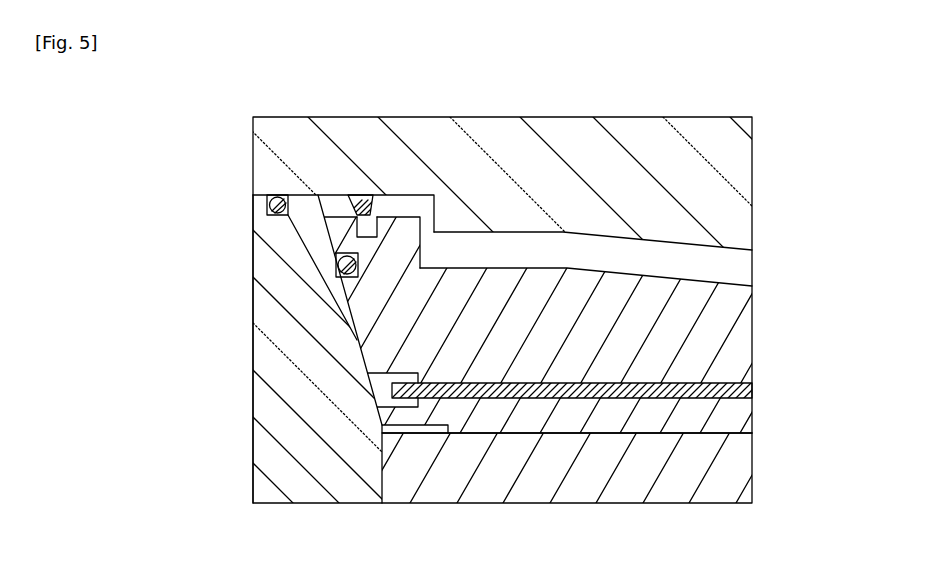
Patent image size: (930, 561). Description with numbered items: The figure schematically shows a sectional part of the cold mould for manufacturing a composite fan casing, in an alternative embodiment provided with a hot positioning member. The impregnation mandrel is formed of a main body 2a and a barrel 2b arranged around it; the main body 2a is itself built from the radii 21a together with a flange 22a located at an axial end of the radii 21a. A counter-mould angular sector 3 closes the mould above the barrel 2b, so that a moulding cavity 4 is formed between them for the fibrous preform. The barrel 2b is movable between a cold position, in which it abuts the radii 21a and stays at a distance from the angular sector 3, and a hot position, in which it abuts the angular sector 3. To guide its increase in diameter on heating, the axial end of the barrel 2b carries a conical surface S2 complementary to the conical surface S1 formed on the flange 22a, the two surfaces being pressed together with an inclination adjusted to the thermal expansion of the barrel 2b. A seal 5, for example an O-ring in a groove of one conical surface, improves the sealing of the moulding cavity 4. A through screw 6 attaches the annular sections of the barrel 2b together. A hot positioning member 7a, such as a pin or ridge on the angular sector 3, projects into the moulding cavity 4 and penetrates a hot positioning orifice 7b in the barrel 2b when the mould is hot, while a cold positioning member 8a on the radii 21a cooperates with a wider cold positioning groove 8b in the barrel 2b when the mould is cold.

The main body 2a is at (253, 437).
The barrel 2b is at (722, 352).
The counter-mould angular sector 3 is at (713, 183).
The moulding cavity 4 is at (735, 268).
The seal 5 is at (335, 263).
The through screw 6 is at (480, 398).
The hot positioning member 7a is at (360, 196).
The hot positioning orifice 7b is at (356, 236).
The cold positioning member 8a is at (395, 437).
The cold positioning groove 8b is at (437, 432).
The radii 21a is at (585, 483).
The flange 22a is at (270, 400).
The conical surface S1 is at (347, 315).
The conical surface S2 is at (363, 328).